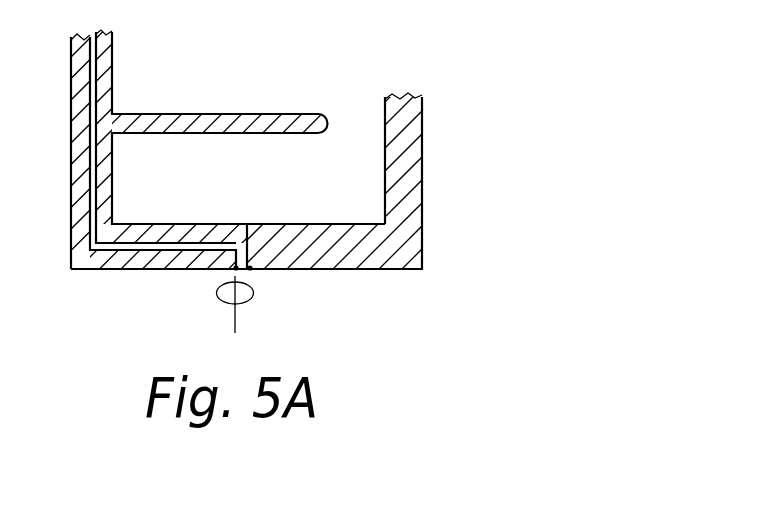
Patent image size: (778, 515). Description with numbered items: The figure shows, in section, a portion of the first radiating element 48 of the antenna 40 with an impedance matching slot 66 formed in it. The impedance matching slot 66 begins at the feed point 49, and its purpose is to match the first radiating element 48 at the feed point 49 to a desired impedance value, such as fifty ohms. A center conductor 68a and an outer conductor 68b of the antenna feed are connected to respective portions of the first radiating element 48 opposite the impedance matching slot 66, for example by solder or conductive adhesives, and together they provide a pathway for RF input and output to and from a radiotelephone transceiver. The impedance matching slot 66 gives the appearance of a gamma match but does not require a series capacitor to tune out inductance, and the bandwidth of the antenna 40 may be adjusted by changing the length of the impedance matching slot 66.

The antenna 40 is at (302, 72).
The first radiating element 48 is at (425, 177).
The feed point 49 is at (236, 268).
The impedance matching slot 66 is at (243, 224).
The center conductor 68a is at (235, 319).
The outer conductor 68b is at (250, 285).